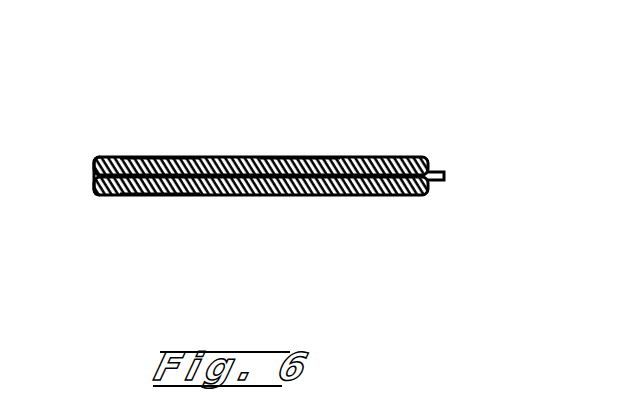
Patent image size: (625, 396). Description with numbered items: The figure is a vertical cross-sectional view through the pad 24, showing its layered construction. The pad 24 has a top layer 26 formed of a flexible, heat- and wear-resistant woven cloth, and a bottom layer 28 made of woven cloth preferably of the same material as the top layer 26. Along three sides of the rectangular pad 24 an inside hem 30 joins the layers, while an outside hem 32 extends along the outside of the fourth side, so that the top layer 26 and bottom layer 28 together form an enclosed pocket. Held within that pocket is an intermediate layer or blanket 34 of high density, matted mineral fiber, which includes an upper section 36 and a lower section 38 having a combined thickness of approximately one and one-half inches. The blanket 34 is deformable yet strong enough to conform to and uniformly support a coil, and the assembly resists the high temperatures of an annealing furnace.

The pad 24 is at (404, 134).
The top layer 26 is at (235, 157).
The bottom layer 28 is at (272, 196).
The inside hem 30 is at (99, 157).
The outside hem 32 is at (441, 174).
The blanket 34 is at (297, 158).
The upper section 36 is at (158, 157).
The lower section 38 is at (150, 196).